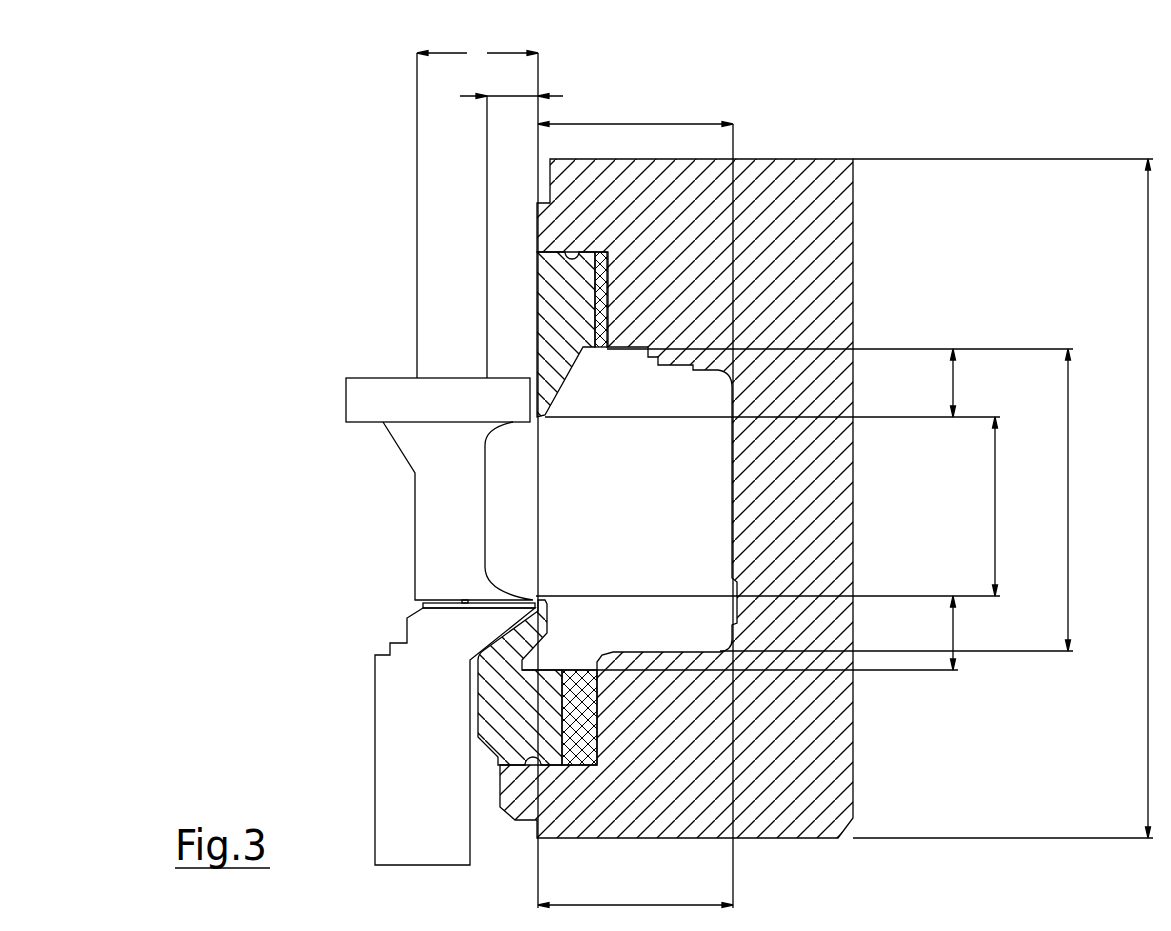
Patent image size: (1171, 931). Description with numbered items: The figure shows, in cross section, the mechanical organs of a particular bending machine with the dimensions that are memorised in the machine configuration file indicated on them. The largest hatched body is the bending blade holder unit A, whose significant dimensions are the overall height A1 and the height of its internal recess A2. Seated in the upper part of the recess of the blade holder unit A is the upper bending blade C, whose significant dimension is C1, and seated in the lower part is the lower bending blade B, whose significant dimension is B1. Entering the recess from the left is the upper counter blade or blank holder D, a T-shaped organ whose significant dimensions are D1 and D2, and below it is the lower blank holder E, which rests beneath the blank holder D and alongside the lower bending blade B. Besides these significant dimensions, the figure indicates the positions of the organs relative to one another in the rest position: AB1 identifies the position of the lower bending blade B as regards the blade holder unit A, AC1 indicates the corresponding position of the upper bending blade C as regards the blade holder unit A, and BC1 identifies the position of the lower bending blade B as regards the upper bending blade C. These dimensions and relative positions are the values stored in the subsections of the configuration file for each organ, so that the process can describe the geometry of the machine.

The bending blade holder unit A is at (676, 498).
The lower bending blade B is at (537, 682).
The upper bending blade C is at (572, 334).
The upper counter blade or blank holder D is at (440, 493).
The lower blank holder E is at (455, 736).
The significant dimension of organ D D2 is at (477, 41).
The significant dimension of organ D D1 is at (511, 82).
The position of organ C as regards organ A AC1 is at (635, 111).
The position of organ B as regards organ A AB1 is at (635, 890).
The significant dimension of organ A A1 is at (1147, 498).
The significant dimension of organ A A2 is at (1068, 500).
The significant dimension of organ C C1 is at (952, 383).
The position of organ B as regards organ C BC1 is at (1000, 506).
The significant dimension of organ B B1 is at (952, 633).